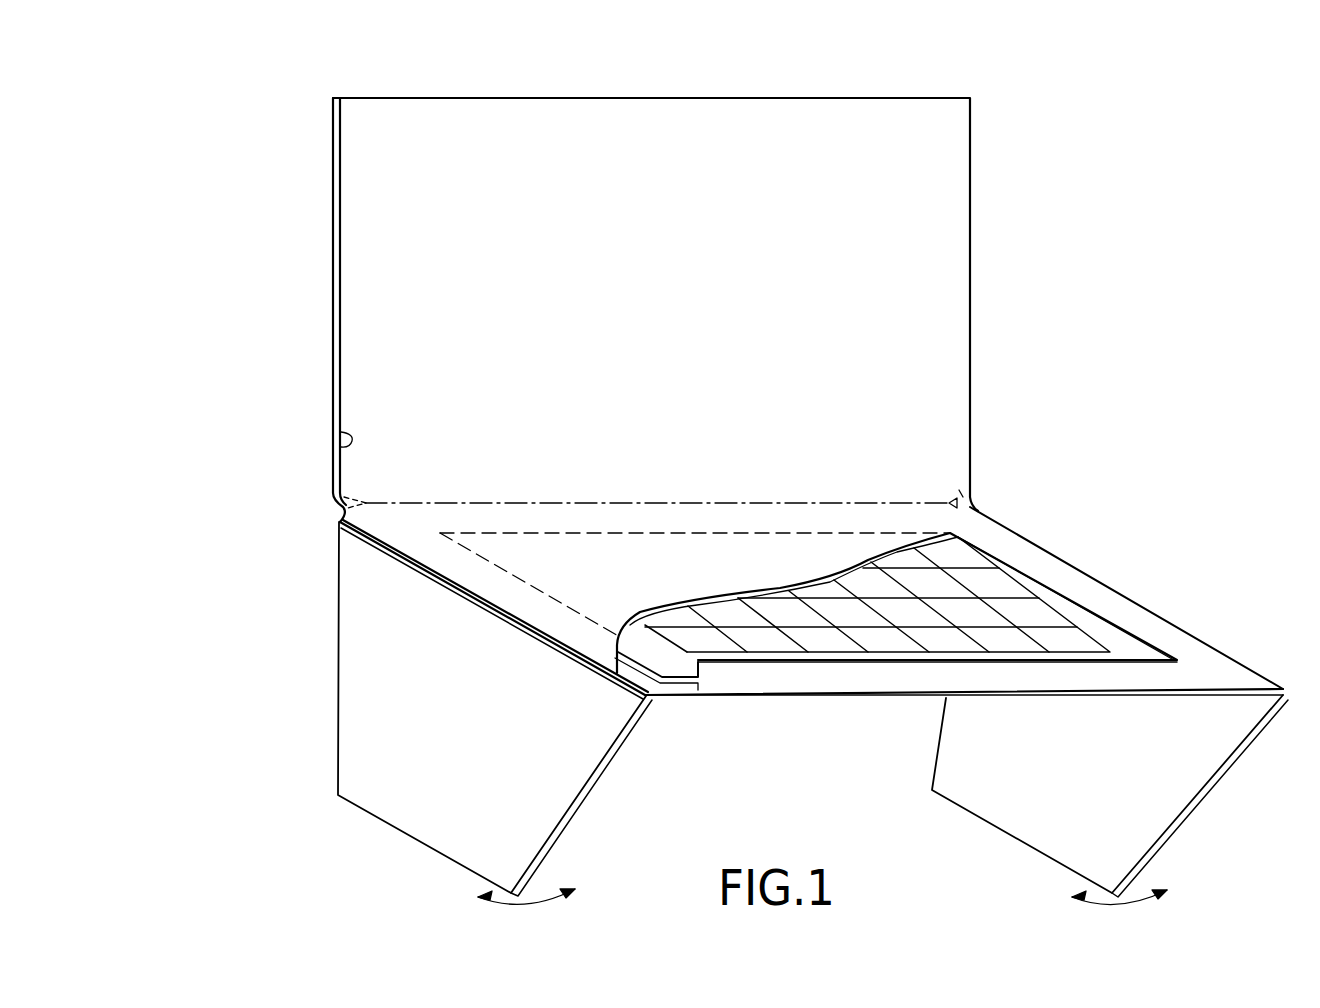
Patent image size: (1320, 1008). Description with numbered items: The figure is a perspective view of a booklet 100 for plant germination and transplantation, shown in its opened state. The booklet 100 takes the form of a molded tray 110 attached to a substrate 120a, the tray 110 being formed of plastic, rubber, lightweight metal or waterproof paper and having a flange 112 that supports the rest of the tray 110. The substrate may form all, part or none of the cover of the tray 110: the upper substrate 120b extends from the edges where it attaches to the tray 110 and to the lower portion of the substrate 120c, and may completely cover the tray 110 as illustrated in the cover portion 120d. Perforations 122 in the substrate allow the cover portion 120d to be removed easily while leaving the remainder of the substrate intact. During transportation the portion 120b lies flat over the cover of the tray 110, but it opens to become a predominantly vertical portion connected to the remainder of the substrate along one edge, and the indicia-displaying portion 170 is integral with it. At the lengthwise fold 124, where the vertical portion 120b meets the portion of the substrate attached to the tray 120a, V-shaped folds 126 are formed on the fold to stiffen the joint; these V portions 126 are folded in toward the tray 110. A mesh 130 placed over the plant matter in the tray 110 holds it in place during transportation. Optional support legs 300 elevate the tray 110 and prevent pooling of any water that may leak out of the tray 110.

The booklet 100 is at (280, 322).
The molded tray 110 is at (683, 637).
The flange 112 is at (682, 665).
The substrate 120a is at (1063, 683).
The upper substrate portion 120b is at (346, 447).
The lower portion of substrate 120c is at (334, 397).
The cover portion of substrate 120d is at (593, 585).
The perforations 122 is at (488, 561).
The lengthwise fold 124 is at (905, 502).
The V-shaped folds 126 is at (340, 503).
The mesh 130 is at (980, 597).
The display portion 170 is at (683, 118).
The support legs 300 is at (420, 828).